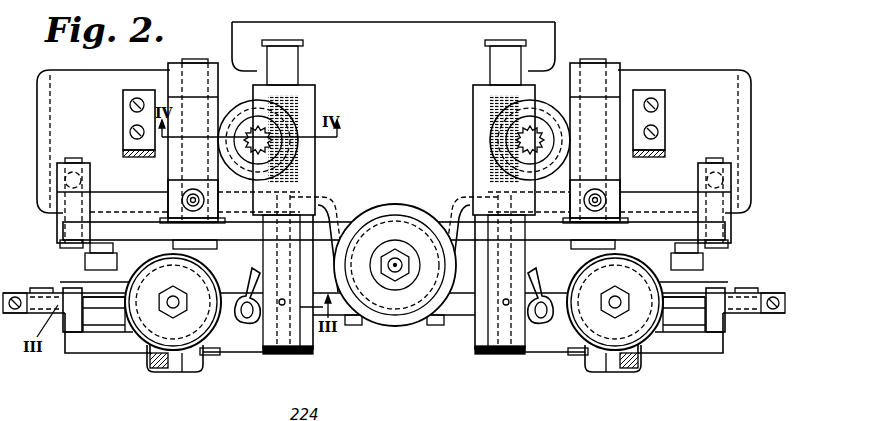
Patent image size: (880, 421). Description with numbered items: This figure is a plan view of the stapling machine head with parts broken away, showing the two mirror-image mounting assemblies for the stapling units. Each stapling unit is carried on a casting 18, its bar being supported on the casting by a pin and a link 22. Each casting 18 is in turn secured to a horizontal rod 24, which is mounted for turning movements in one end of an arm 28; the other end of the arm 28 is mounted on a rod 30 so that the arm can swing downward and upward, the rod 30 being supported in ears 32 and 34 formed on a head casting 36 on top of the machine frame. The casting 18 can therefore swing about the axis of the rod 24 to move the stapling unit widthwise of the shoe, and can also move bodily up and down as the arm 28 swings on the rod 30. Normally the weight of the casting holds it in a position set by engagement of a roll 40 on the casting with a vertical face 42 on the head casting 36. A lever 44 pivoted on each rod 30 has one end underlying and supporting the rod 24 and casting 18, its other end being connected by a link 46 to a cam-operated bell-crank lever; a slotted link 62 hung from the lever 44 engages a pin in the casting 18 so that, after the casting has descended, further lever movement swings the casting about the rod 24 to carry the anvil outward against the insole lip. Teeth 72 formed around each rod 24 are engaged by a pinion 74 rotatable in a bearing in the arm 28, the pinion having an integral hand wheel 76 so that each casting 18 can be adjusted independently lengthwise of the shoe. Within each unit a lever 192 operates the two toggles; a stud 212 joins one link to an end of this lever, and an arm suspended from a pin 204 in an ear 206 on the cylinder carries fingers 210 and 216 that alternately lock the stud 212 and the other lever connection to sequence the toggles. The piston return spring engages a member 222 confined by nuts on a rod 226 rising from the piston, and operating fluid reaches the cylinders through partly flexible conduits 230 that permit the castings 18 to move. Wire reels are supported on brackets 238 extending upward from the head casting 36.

The casting 18 is at (248, 348).
The link 22 is at (40, 286).
The horizontal rod 24 is at (313, 340).
The arm 28 is at (217, 117).
The rod 30 is at (207, 68).
The ear 32 is at (172, 68).
The ear 34 is at (173, 200).
The head casting 36 is at (751, 122).
The roll 40 is at (470, 231).
The vertical face 42 is at (372, 243).
The lever 44 is at (150, 232).
The link 46 is at (62, 186).
The link 62 is at (117, 252).
The teeth 72 is at (298, 174).
The pinion 74 is at (238, 128).
The hand wheel 76 is at (230, 153).
The lever 192 is at (93, 298).
The pin 204 is at (172, 372).
The ear 206 is at (190, 362).
The finger 210 is at (123, 350).
The stud 212 is at (72, 338).
The finger 216 is at (213, 356).
The member 222 is at (165, 330).
The rod 226 is at (195, 310).
The conduit 230 is at (253, 273).
The bracket 238 is at (122, 152).